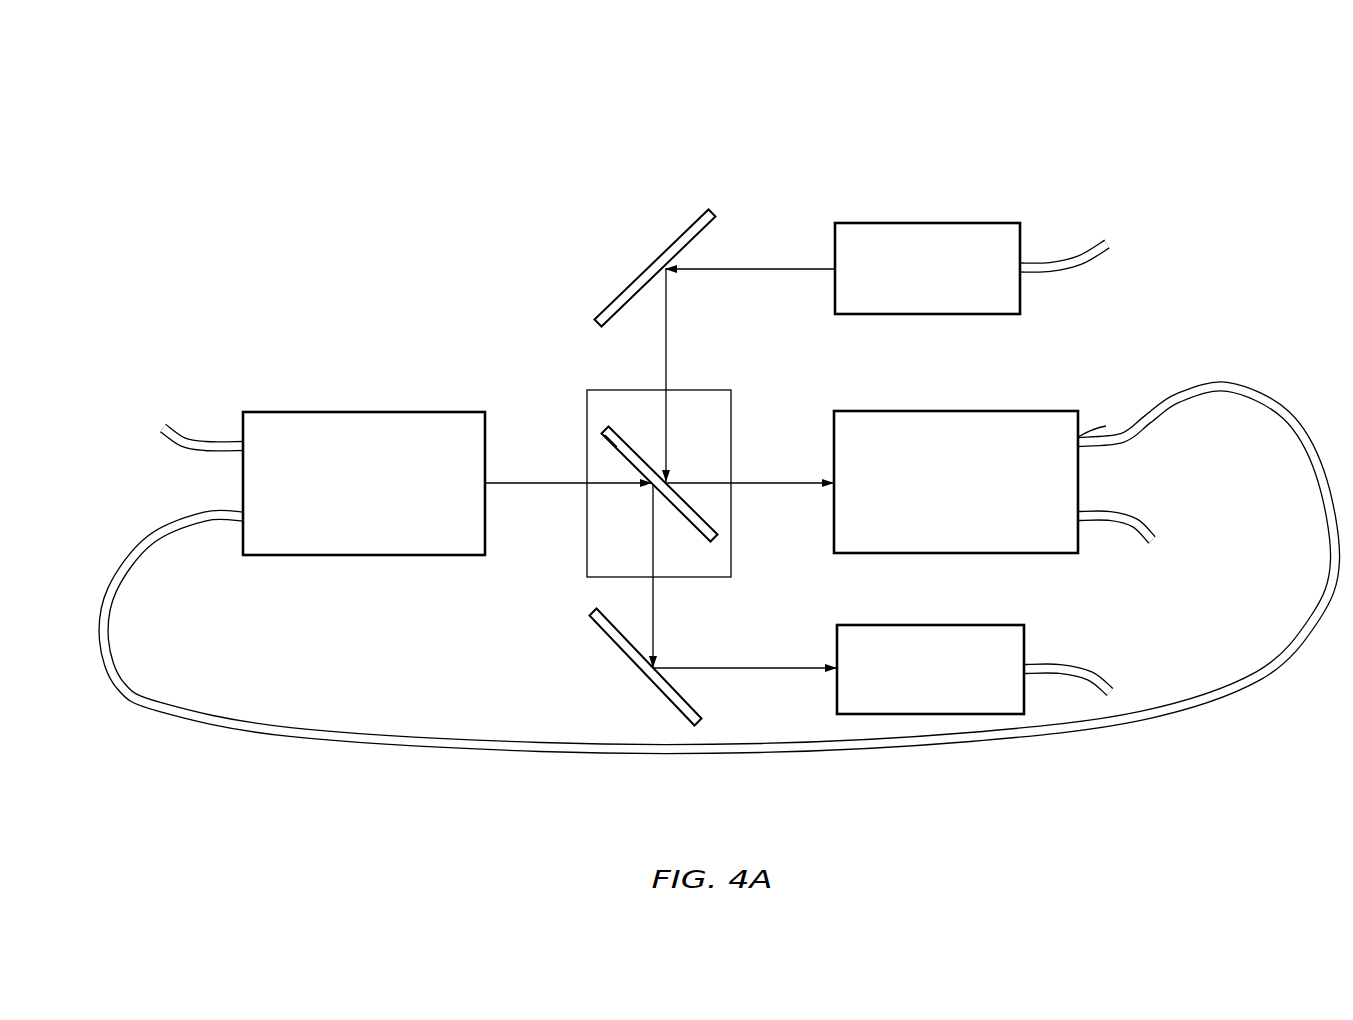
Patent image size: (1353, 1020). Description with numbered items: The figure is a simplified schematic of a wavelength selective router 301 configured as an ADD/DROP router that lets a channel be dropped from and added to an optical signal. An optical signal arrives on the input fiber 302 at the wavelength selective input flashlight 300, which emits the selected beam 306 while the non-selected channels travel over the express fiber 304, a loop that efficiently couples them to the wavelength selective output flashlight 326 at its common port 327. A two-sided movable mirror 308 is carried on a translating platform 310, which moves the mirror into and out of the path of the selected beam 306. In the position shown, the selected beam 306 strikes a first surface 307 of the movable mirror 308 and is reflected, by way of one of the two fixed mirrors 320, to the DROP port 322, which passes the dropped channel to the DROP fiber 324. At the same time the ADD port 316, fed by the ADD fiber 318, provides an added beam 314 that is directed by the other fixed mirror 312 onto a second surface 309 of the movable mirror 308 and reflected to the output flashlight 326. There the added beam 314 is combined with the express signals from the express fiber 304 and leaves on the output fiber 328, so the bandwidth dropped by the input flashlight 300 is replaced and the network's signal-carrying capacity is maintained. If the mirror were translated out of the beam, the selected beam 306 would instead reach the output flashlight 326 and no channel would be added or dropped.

The wavelength selective input flashlight 300 is at (368, 412).
The wavelength selective router 301 is at (298, 128).
The input fiber 302 is at (180, 445).
The express fiber 304 is at (377, 748).
The selected beam 306 is at (543, 483).
The first surface 307 is at (613, 448).
The movable mirror 308 is at (612, 430).
The second surface 309 is at (707, 515).
The translating platform 310 is at (733, 548).
The fixed mirror 312 is at (650, 266).
The added beam 314 is at (768, 268).
The ADD port 316 is at (930, 223).
The ADD fiber 318 is at (1047, 273).
The fixed mirror 320 is at (617, 648).
The DROP port 322 is at (932, 625).
The DROP fiber 324 is at (1058, 665).
The wavelength selective output flashlight 326 is at (932, 411).
The common port 327 is at (1083, 432).
The output fiber 328 is at (1102, 520).